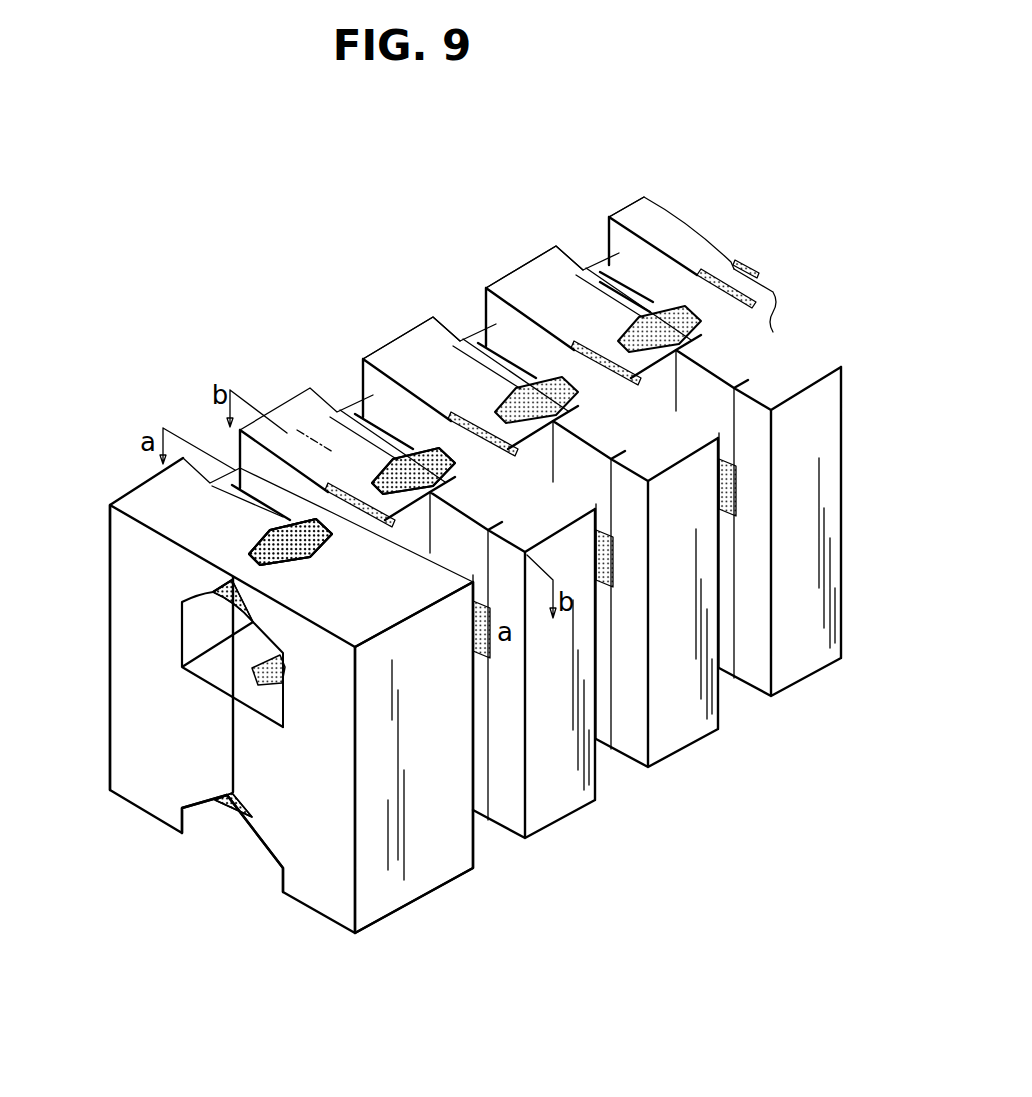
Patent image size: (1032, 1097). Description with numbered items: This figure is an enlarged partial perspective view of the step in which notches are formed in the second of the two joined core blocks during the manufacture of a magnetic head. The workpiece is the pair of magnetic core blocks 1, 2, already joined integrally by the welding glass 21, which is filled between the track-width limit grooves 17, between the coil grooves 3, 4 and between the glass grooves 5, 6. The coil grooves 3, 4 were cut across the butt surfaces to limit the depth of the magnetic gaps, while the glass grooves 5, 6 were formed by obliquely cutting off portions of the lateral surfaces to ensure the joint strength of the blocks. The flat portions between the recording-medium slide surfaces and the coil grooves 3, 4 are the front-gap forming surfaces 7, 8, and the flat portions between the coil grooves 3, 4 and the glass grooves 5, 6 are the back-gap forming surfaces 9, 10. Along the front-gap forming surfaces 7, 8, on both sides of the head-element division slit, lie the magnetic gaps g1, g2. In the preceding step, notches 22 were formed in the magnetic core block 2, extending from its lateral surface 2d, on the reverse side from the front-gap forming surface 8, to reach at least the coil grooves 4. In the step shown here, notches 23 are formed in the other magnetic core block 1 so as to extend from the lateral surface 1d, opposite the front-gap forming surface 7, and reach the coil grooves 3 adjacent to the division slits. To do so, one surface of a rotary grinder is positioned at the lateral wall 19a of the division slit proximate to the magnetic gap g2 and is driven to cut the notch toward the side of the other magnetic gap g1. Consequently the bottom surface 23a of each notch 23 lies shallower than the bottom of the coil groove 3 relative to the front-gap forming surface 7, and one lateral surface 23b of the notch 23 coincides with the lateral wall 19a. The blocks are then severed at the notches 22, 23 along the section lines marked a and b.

The magnetic core block 1 is at (128, 718).
The lateral surface 1d is at (110, 610).
The magnetic core block 2 is at (322, 892).
The lateral surface 2d is at (425, 878).
The coil groove 3 is at (183, 641).
The coil groove 4 is at (283, 706).
The glass groove 5 is at (190, 832).
The glass groove 6 is at (283, 880).
The front-gap forming surface 7 is at (230, 580).
The front-gap forming surface 8 is at (233, 601).
The back-gap forming surface 9 is at (232, 748).
The back-gap forming surface 10 is at (233, 805).
The track-width limit groove 17 is at (263, 546).
The lateral wall of head-element division slit 19a is at (433, 408).
The welding glass 21 is at (290, 546).
The notch 22 is at (508, 822).
The notch 23 is at (377, 377).
The bottom surface of notch 23a is at (458, 466).
The lateral surface of notch 23b is at (386, 348).
The magnetic gap g1 is at (328, 490).
The magnetic gap g2 is at (368, 490).